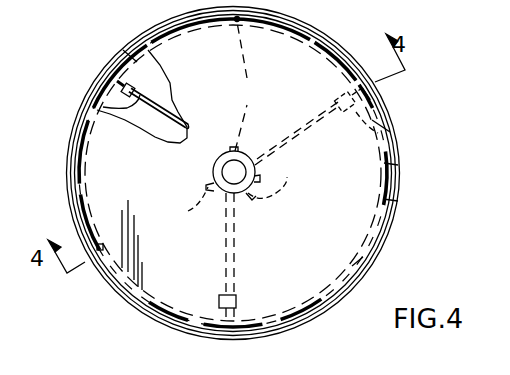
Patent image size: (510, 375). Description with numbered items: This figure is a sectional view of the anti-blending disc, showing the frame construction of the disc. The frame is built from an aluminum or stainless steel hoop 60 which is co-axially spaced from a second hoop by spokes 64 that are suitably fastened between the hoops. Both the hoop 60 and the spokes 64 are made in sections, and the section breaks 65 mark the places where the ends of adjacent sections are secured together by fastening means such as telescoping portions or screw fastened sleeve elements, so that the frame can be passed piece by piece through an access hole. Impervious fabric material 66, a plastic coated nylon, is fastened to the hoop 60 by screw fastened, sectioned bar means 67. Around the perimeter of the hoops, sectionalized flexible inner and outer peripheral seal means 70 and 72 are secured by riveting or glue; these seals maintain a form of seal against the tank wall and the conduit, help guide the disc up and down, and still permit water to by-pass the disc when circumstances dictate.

The hoop 60 is at (133, 63).
The spokes 64 is at (108, 107).
The section breaks 65 is at (404, 254).
The impervious fabric material 66 is at (313, 72).
The sectioned bar means 67 is at (391, 199).
The inner peripheral seal means 70 is at (372, 106).
The outer peripheral seal means 72 is at (213, 172).